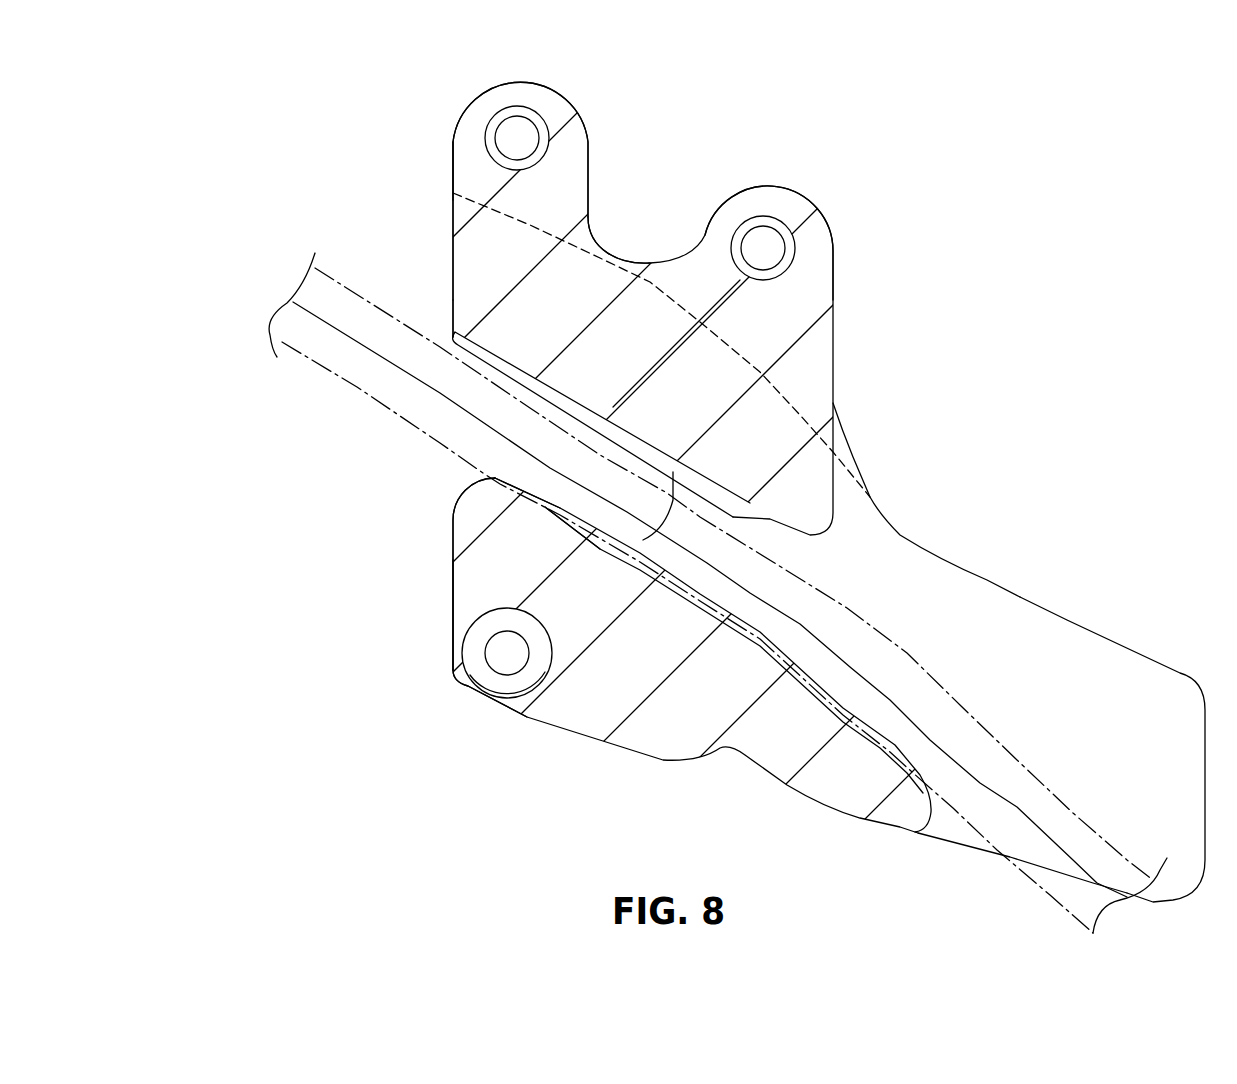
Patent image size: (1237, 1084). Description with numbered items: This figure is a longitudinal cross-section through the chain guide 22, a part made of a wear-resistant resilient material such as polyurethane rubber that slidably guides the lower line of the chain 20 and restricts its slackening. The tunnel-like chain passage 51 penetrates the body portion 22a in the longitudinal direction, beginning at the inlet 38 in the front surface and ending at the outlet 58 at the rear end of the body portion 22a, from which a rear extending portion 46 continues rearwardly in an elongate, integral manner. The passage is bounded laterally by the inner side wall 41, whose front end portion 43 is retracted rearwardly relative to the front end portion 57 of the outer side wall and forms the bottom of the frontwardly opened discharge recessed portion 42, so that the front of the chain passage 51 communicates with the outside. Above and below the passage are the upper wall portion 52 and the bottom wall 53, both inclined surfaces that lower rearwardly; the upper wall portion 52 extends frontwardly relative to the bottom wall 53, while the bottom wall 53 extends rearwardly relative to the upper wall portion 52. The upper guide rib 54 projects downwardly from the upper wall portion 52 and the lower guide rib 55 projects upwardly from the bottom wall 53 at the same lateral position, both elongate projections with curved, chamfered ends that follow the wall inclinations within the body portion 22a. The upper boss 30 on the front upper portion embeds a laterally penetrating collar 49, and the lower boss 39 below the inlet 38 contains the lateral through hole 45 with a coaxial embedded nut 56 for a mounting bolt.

The chain 20 is at (300, 298).
The chain guide 22 is at (676, 475).
The body portion 22a is at (818, 360).
The upper boss 30 is at (565, 100).
The inlet 38 is at (676, 650).
The lower boss 39 is at (452, 673).
The inner side wall 41 is at (640, 333).
The discharge recessed portion 42 is at (547, 442).
The front end portion of the inner side wall 43 is at (660, 523).
The through hole 45 is at (505, 660).
The rear extending portion 46 is at (1090, 640).
The collar 49 is at (490, 123).
The chain passage 51 is at (497, 400).
The upper wall portion 52 is at (457, 325).
The bottom wall 53 is at (542, 505).
The upper guide rib 54 is at (482, 352).
The lower guide rib 55 is at (540, 480).
The nut 56 is at (492, 688).
The front end portion of the outer side wall 57 is at (453, 620).
The outlet 58 is at (860, 588).